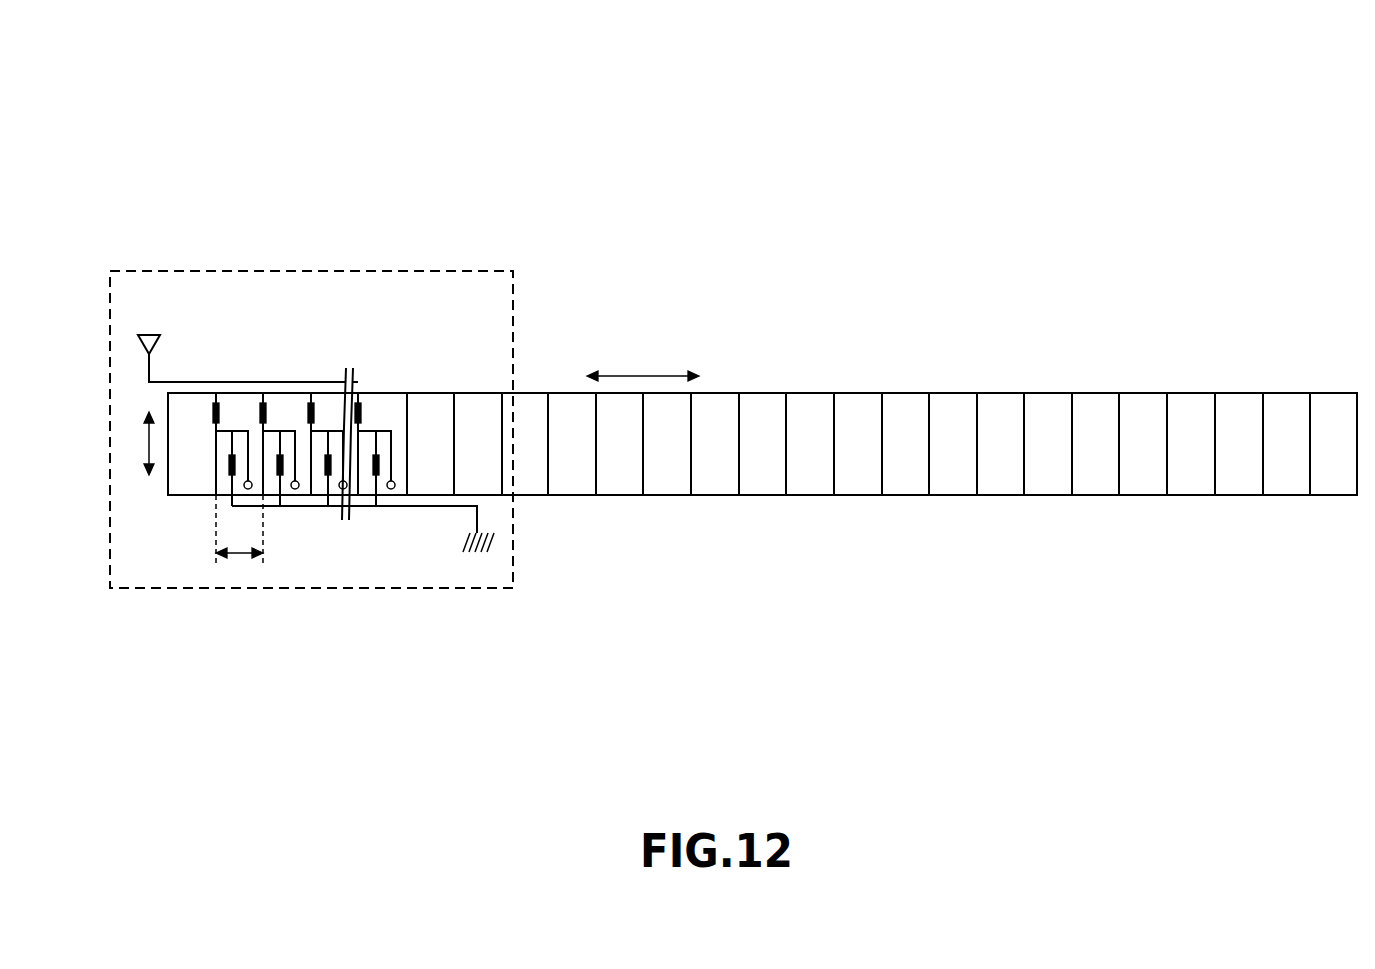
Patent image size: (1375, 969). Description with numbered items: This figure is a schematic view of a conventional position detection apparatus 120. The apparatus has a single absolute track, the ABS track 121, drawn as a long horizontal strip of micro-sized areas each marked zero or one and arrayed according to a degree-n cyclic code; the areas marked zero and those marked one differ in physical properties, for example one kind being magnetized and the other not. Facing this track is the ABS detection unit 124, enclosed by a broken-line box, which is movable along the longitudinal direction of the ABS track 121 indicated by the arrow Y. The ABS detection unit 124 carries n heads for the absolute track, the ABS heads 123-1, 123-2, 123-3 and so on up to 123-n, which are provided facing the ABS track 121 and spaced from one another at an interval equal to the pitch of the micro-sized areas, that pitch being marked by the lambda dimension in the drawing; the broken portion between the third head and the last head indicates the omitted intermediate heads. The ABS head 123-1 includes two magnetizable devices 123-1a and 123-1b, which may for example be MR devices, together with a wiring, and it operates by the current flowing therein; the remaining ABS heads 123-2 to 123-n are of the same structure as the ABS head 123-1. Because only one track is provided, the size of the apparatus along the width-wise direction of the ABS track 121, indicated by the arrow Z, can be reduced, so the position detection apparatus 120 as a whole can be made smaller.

The position detection apparatus 120 is at (717, 127).
The ABS track 121 is at (1098, 393).
The ABS detection unit 124 is at (365, 271).
The ABS head 123-1 is at (220, 425).
The magnetizable device 123-1a is at (213, 416).
The magnetizable device 123-1b is at (230, 466).
The ABS head 123-2 is at (268, 428).
The ABS head 123-3 is at (317, 428).
The ABS head 123-n is at (362, 428).